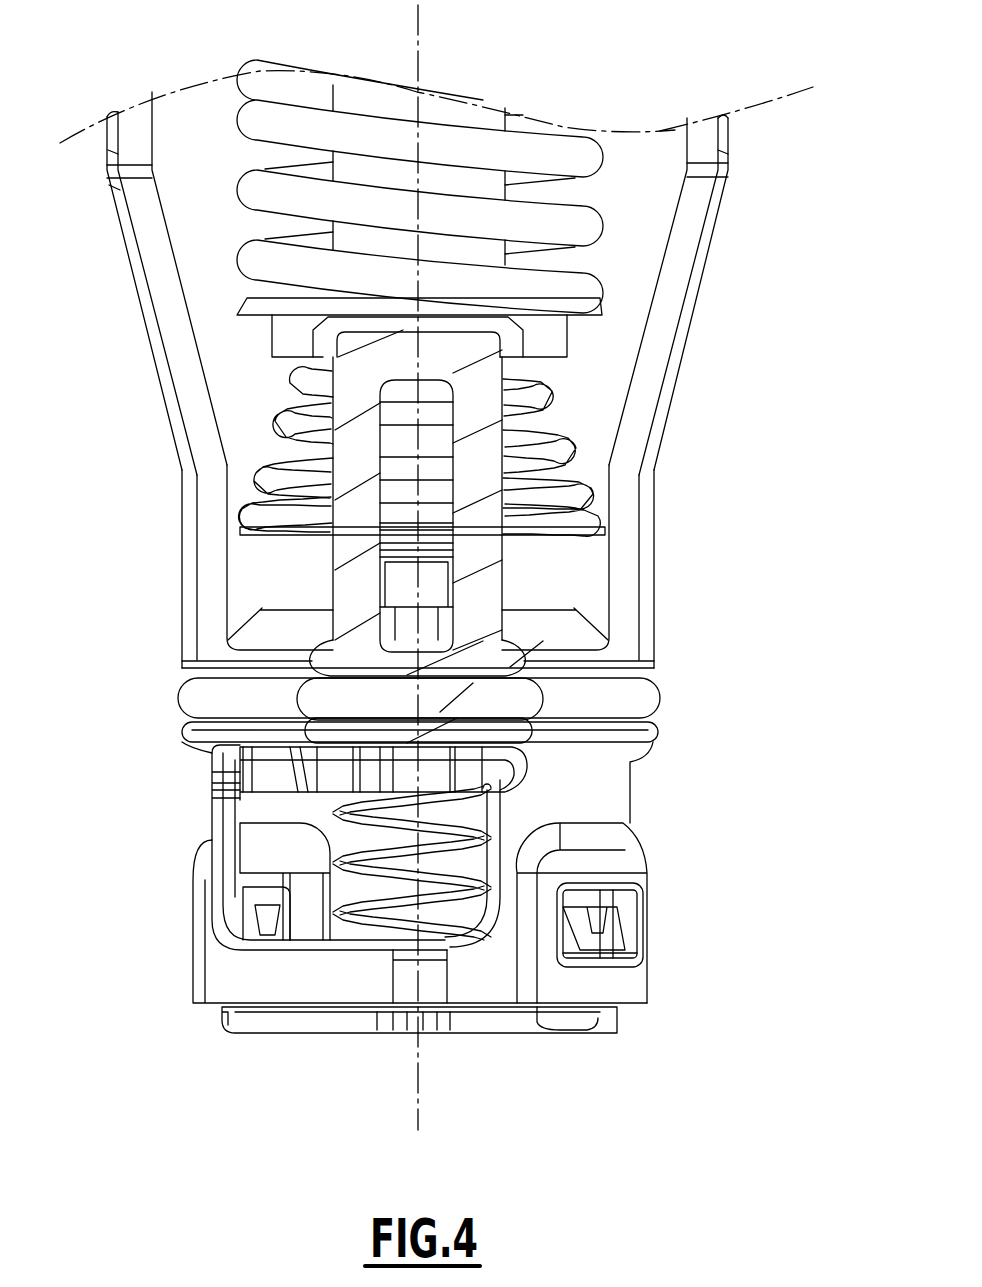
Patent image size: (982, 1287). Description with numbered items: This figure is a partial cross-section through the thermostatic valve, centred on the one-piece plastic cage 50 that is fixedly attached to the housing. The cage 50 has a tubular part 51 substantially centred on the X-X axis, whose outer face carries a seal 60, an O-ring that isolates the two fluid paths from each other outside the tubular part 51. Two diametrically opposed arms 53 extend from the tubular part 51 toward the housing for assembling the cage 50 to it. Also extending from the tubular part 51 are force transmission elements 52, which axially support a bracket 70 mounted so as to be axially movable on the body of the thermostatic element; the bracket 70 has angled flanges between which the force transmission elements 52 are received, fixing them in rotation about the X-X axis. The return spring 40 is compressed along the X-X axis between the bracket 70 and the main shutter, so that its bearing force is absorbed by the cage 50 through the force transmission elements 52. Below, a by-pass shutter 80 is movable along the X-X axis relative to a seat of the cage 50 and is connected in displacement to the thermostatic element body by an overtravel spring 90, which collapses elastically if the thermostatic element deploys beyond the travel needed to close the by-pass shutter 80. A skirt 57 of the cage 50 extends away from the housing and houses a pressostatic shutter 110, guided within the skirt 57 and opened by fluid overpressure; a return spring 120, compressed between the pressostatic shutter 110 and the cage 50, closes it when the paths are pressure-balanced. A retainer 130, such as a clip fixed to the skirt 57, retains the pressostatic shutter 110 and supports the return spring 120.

The return spring 40 is at (612, 158).
The cage 50 is at (172, 597).
The tubular part 51 is at (512, 667).
The force transmission elements 52 is at (355, 462).
The arms 53 is at (157, 247).
The skirt 57 is at (602, 795).
The seal 60 is at (168, 697).
The bracket 70 is at (312, 343).
The by-pass shutter 80 is at (615, 527).
The overtravel spring 90 is at (562, 397).
The pressostatic shutter 110 is at (228, 787).
The return spring 120 is at (318, 858).
The retainer 130 is at (208, 1019).